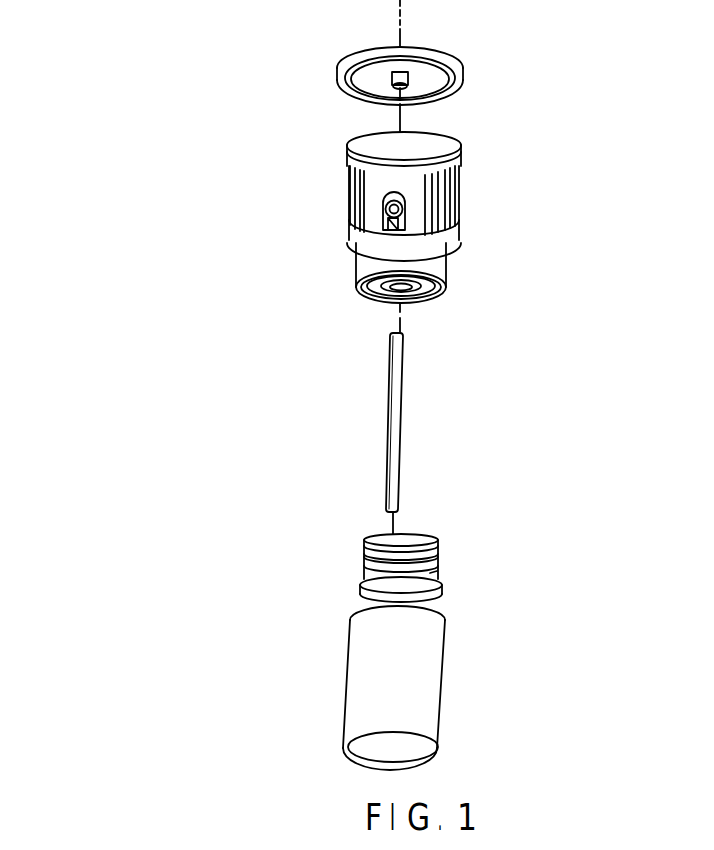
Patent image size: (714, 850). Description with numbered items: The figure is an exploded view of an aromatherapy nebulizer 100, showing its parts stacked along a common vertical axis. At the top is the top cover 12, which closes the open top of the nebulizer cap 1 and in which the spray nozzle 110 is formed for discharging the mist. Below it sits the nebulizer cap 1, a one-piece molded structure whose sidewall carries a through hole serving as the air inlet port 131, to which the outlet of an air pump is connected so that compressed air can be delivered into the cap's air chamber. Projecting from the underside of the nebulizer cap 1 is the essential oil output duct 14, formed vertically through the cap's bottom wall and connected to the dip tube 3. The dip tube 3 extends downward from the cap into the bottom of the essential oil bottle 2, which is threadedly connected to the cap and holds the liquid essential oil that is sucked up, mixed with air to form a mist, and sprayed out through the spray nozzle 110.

The aromatherapy nebulizer 100 is at (160, 622).
The top cover 12 is at (410, 86).
The spray nozzle 110 is at (406, 88).
The nebulizer cap 1 is at (417, 197).
The air inlet port 131 is at (401, 209).
The essential oil output duct 14 is at (440, 297).
The dip tube 3 is at (373, 452).
The essential oil bottle 2 is at (345, 668).